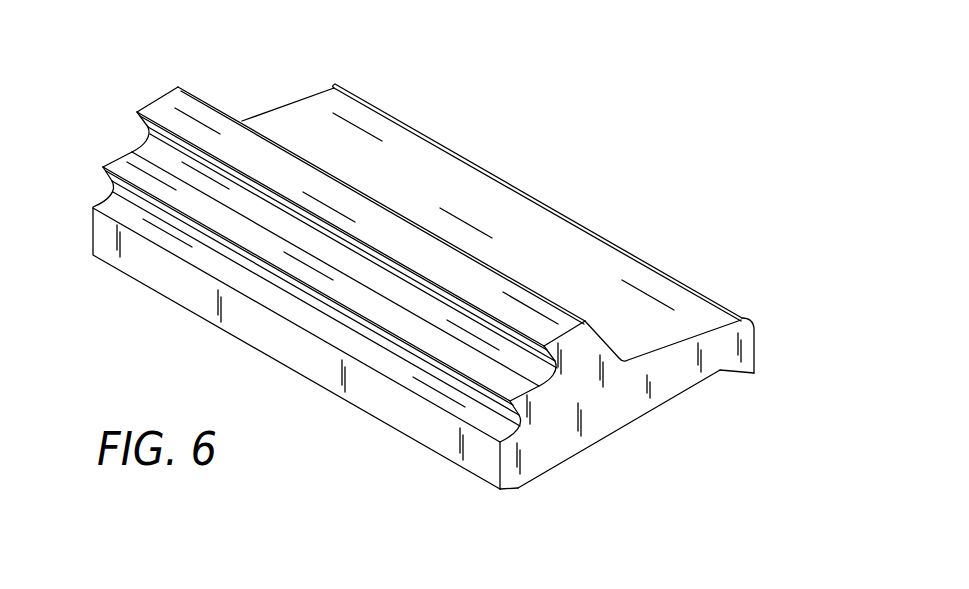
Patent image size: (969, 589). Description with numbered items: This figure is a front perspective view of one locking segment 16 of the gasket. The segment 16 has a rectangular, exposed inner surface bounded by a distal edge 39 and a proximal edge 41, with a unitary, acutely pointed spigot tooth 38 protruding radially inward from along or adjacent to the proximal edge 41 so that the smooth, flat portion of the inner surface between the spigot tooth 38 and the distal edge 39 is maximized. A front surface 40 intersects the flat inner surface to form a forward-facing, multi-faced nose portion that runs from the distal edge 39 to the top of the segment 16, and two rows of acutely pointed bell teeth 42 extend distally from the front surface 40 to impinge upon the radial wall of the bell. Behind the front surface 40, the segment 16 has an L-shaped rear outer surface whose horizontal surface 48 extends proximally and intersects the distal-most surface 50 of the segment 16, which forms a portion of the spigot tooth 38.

The segment 16 is at (138, 80).
The spigot tooth 38 is at (730, 376).
The distal edge 39 is at (518, 491).
The front surface 40 is at (198, 108).
The proximal edge 41 is at (752, 374).
The bell teeth 42 is at (137, 112).
The horizontal surface 48 is at (573, 243).
The distal-most surface 50 is at (757, 350).